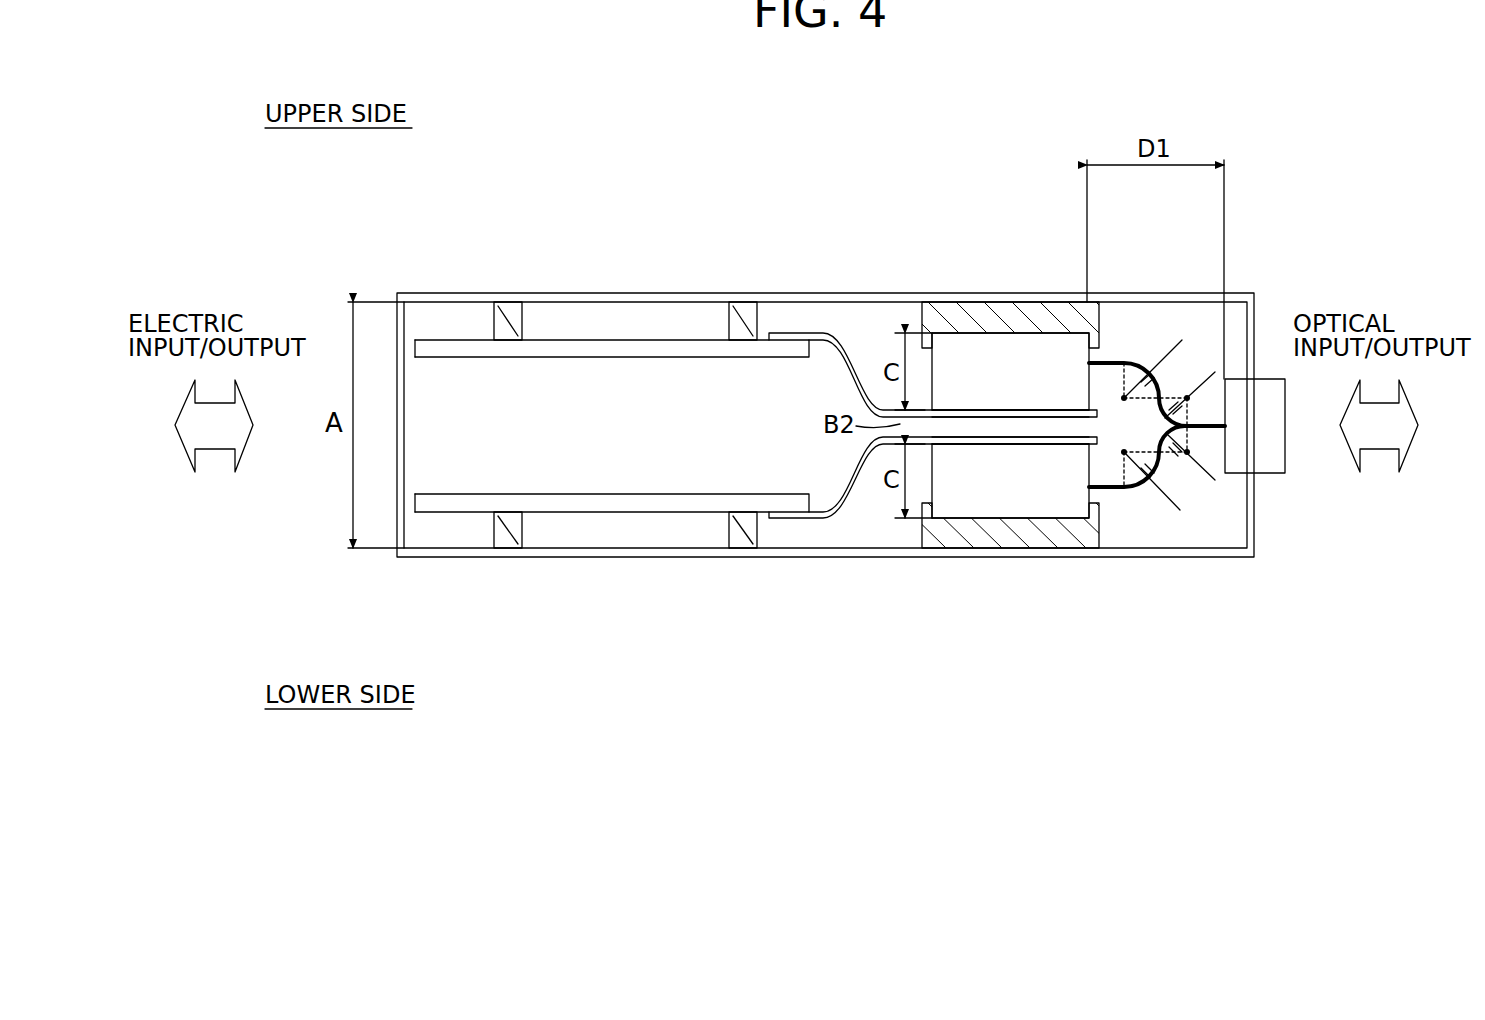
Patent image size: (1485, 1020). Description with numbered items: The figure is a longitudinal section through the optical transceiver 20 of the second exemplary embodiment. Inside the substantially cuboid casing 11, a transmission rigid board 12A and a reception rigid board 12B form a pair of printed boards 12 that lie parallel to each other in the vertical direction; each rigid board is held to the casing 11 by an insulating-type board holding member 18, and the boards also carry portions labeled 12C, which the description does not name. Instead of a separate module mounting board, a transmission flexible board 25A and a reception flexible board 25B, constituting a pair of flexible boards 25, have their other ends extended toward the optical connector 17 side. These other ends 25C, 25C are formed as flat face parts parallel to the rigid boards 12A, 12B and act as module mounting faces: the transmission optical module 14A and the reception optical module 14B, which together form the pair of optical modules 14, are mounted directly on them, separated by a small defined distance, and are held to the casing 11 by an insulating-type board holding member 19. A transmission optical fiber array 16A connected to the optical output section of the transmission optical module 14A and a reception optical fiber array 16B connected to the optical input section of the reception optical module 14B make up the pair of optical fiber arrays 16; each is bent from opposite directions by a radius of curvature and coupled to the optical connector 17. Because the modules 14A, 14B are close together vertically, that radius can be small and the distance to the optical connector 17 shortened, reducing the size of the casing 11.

The optical transceiver 20 is at (1250, 176).
The casing 11 is at (765, 297).
The printed boards 12 is at (575, 348).
The transmission rigid board 12A is at (622, 345).
The reception rigid board 12B is at (626, 500).
The board end portion 12C is at (467, 333).
The board holding member 18 is at (509, 308).
The flexible boards 25 is at (800, 334).
The transmission flexible board 25A is at (843, 345).
The reception flexible board 25B is at (834, 518).
The other end of flexible board 25C is at (953, 408).
The optical modules 14 is at (978, 333).
The transmission optical module 14A is at (1032, 360).
The reception optical module 14B is at (998, 490).
The board holding member 19 is at (932, 318).
The optical fiber arrays 16 is at (1103, 361).
The transmission optical fiber array 16A is at (1126, 362).
The reception optical fiber array 16B is at (1130, 490).
The optical connector 17 is at (1268, 455).